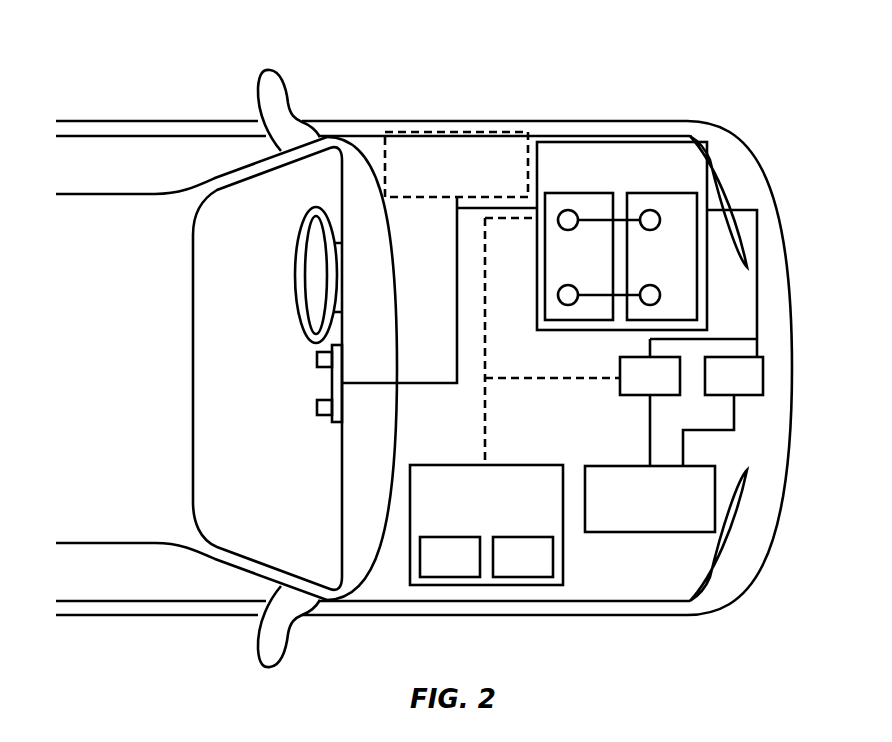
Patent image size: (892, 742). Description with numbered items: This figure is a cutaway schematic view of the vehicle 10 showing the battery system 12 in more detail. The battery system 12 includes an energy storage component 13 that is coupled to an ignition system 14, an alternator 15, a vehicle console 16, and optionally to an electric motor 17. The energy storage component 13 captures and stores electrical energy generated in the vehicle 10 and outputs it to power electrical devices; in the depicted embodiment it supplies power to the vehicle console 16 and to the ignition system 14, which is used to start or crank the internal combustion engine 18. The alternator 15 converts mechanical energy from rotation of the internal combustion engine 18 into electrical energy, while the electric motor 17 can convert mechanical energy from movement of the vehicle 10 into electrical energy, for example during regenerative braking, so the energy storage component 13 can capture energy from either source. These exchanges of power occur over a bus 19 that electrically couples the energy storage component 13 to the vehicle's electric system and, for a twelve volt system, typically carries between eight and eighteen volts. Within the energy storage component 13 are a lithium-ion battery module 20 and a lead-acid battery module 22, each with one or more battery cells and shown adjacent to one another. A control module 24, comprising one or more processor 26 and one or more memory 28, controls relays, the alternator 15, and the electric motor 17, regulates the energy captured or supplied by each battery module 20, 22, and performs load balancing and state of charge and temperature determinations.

The vehicle 10 is at (467, 53).
The battery system 12 is at (706, 71).
The energy storage component 13 is at (622, 206).
The ignition system 14 is at (763, 378).
The alternator 15 is at (635, 395).
The vehicle console 16 is at (308, 383).
The electric motor 17 is at (453, 133).
The internal combustion engine 18 is at (618, 466).
The bus 19 is at (457, 289).
The lithium-ion battery module 20 is at (579, 256).
The lead-acid battery module 22 is at (662, 256).
The control module 24 is at (488, 512).
The processor 26 is at (450, 577).
The memory 28 is at (523, 577).